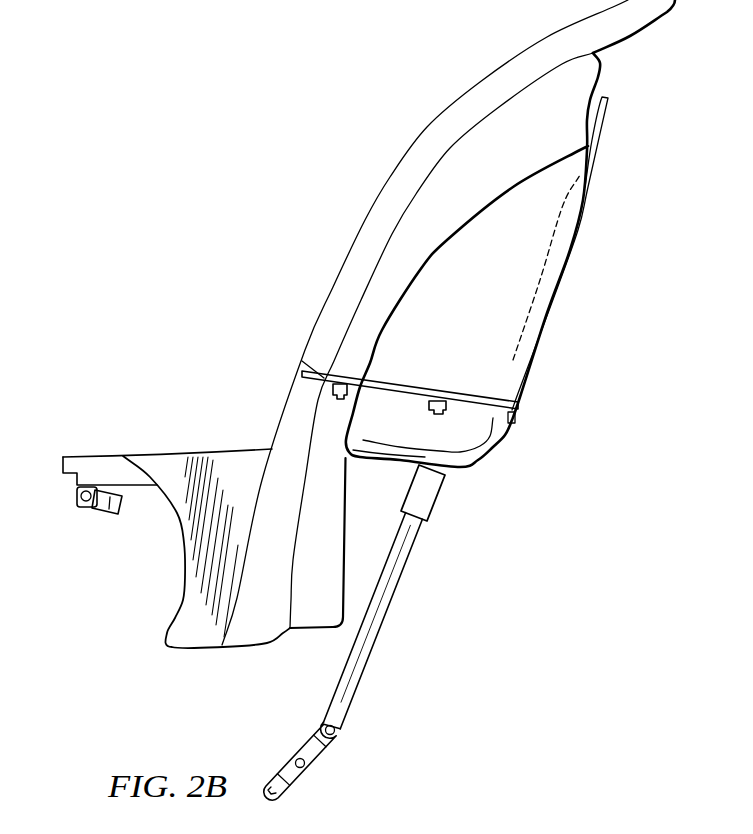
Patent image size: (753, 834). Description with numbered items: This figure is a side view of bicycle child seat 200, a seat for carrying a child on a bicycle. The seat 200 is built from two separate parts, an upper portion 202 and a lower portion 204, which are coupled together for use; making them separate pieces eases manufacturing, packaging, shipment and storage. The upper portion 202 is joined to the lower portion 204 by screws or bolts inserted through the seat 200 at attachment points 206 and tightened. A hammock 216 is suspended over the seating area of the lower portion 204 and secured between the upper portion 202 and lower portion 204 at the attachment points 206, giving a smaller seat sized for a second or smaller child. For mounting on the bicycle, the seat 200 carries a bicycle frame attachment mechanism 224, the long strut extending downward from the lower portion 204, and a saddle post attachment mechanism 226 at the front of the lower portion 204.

The bicycle child seat 200 is at (391, 417).
The upper portion 202 is at (389, 180).
The lower portion 204 is at (203, 648).
The attachment points 206 is at (436, 415).
The hammock 216 is at (470, 393).
The bicycle frame attachment mechanism 224 is at (377, 643).
The saddle post attachment mechanism 226 is at (103, 512).